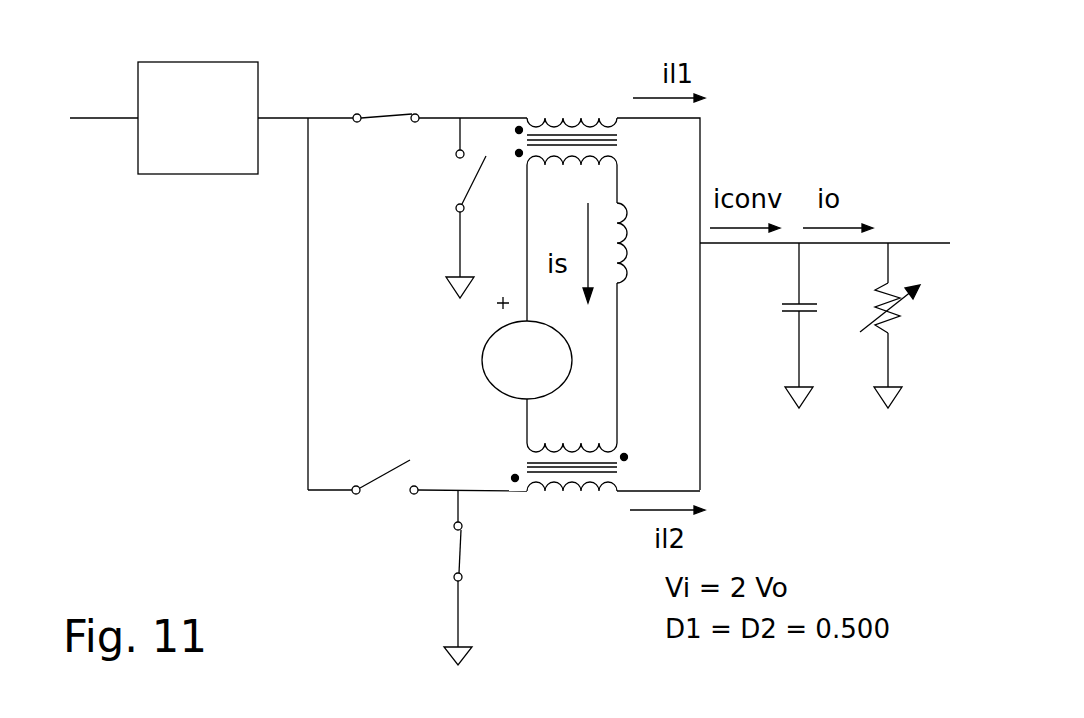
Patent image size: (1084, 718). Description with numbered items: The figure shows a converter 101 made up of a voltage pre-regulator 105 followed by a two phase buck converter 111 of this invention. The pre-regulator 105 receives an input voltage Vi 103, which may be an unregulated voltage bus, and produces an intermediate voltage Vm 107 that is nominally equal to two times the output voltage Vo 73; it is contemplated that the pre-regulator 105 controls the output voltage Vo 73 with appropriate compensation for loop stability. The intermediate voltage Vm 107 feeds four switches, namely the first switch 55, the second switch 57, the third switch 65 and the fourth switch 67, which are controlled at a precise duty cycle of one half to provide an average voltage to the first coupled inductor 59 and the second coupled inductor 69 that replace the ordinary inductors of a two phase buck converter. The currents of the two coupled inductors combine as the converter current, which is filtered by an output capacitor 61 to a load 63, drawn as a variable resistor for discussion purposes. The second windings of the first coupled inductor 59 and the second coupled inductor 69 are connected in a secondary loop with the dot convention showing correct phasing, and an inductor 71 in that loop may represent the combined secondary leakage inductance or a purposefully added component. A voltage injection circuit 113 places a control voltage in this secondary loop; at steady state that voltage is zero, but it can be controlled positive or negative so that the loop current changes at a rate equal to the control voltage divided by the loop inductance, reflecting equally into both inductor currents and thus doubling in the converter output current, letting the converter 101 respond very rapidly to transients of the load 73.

The converter 101 is at (168, 20).
The input voltage Vi 103 is at (80, 125).
The voltage pre-regulator 105 is at (215, 185).
The intermediate voltage Vm 107 is at (280, 112).
The two phase buck converter 111 is at (512, 43).
The switch S1a 55 is at (396, 108).
The switch S1b 57 is at (450, 168).
The coupled inductor T1 59 is at (531, 105).
The inductor L 71 is at (637, 207).
The voltage injection circuit 113 is at (475, 382).
The coupled inductor T2 69 is at (600, 503).
The switch S2a 65 is at (445, 550).
The switch S2b 67 is at (462, 577).
The output voltage Vo 73 is at (888, 230).
The output capacitor C1 61 is at (808, 318).
The load Ro 63 is at (903, 327).